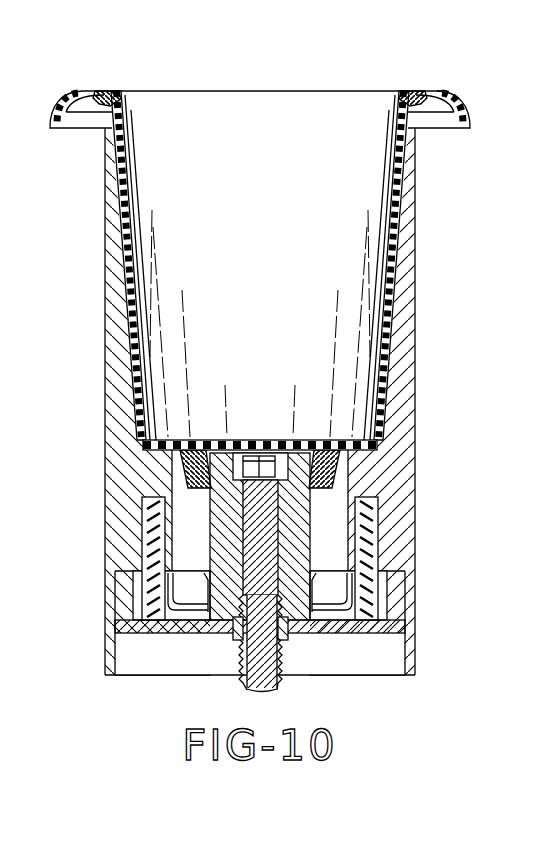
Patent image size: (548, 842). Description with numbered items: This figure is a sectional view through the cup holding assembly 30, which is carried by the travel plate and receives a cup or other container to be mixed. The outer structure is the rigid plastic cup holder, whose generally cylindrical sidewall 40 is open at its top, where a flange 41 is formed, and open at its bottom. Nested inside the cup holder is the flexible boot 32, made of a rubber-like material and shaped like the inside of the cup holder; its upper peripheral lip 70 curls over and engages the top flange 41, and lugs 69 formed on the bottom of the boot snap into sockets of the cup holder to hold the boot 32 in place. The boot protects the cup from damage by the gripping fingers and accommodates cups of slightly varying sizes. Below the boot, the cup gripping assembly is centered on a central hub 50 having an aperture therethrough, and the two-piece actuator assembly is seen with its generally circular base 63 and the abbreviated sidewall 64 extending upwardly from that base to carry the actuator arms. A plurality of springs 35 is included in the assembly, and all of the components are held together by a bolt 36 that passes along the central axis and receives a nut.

The cup holding assembly 30 is at (263, 379).
The flexible boot 32 is at (132, 247).
The springs 35 is at (160, 538).
The bolt 36 is at (258, 503).
The sidewall 40 is at (122, 320).
The flange 41 is at (103, 97).
The central hub 50 is at (312, 592).
The base 63 is at (162, 627).
The abbreviated sidewall 64 is at (120, 597).
The lugs 69 is at (182, 463).
The upper peripheral lip 70 is at (80, 93).